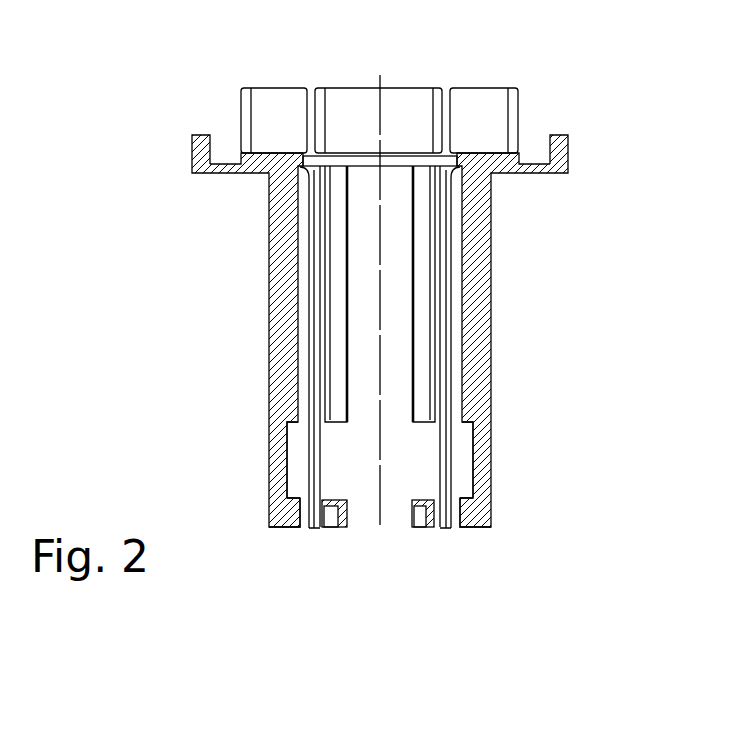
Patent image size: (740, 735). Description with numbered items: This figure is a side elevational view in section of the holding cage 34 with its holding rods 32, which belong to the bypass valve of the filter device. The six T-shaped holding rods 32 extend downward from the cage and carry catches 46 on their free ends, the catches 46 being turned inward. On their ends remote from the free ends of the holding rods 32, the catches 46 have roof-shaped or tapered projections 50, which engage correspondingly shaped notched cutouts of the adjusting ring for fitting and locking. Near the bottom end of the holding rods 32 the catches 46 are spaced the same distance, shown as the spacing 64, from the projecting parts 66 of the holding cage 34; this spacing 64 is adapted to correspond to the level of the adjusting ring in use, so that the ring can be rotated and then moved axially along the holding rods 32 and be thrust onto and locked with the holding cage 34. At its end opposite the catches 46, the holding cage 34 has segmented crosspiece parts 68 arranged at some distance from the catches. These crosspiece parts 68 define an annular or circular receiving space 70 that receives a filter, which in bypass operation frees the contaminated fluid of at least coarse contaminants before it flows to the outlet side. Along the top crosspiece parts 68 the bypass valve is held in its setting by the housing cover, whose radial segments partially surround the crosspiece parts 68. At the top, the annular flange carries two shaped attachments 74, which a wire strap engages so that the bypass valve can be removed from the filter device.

The holding rods 32 is at (283, 372).
The holding cage 34 is at (483, 318).
The catches 46 is at (292, 527).
The roof-shaped projections 50 is at (290, 496).
The spacing 64 is at (423, 433).
The projecting parts 66 is at (415, 292).
The segmented crosspiece parts 68 is at (248, 107).
The receiving space 70 is at (418, 127).
The shaped attachments 74 is at (197, 138).